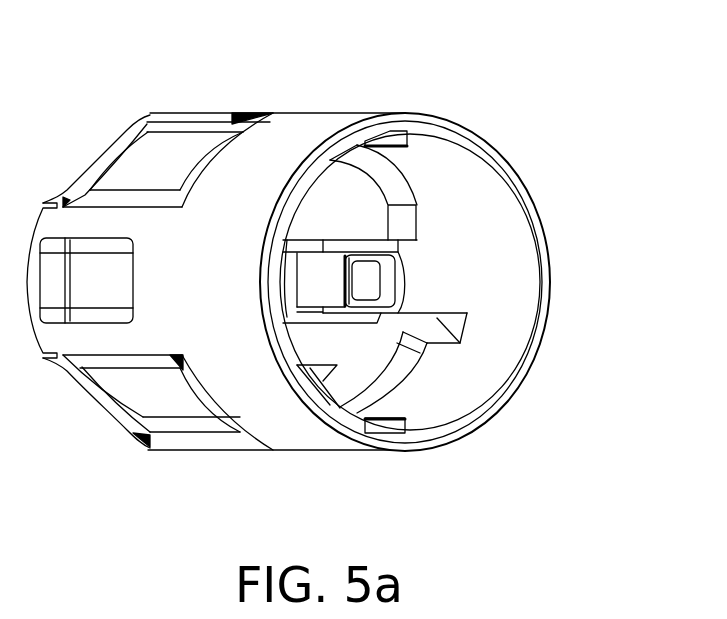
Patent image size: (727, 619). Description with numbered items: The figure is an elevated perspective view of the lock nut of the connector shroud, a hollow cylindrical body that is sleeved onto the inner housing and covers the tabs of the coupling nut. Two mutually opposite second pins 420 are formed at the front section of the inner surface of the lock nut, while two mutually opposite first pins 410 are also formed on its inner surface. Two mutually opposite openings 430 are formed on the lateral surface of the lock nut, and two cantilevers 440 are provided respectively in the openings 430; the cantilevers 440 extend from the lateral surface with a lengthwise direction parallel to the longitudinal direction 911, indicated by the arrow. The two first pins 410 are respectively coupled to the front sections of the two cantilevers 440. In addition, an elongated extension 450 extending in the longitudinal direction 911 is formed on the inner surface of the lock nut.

The first pin 410 is at (362, 282).
The second pin 420 is at (392, 137).
The opening 430 is at (373, 248).
The cantilever 440 is at (321, 287).
The elongated extension 450 is at (460, 325).
The longitudinal direction 911 is at (280, 53).